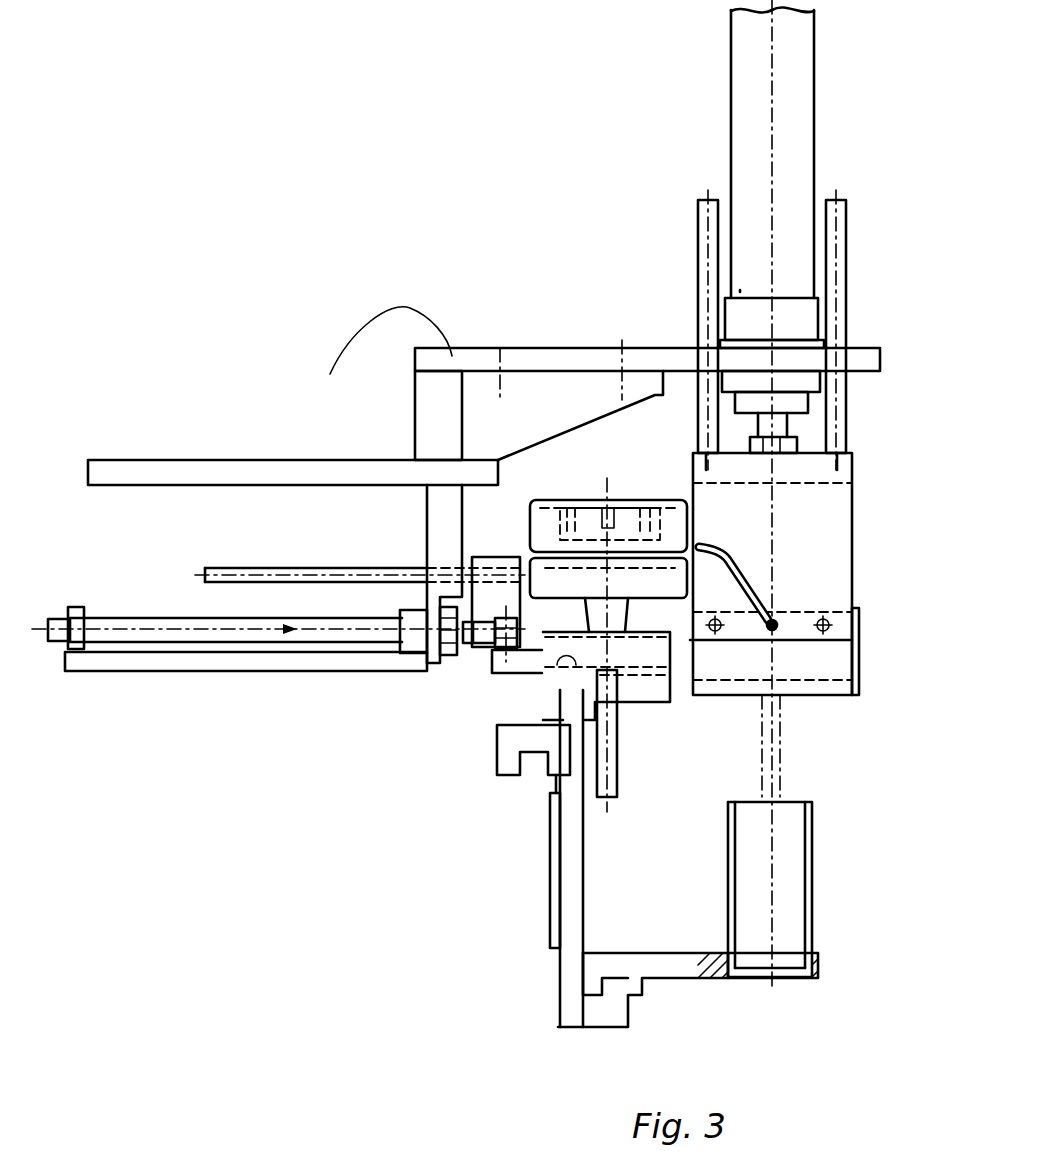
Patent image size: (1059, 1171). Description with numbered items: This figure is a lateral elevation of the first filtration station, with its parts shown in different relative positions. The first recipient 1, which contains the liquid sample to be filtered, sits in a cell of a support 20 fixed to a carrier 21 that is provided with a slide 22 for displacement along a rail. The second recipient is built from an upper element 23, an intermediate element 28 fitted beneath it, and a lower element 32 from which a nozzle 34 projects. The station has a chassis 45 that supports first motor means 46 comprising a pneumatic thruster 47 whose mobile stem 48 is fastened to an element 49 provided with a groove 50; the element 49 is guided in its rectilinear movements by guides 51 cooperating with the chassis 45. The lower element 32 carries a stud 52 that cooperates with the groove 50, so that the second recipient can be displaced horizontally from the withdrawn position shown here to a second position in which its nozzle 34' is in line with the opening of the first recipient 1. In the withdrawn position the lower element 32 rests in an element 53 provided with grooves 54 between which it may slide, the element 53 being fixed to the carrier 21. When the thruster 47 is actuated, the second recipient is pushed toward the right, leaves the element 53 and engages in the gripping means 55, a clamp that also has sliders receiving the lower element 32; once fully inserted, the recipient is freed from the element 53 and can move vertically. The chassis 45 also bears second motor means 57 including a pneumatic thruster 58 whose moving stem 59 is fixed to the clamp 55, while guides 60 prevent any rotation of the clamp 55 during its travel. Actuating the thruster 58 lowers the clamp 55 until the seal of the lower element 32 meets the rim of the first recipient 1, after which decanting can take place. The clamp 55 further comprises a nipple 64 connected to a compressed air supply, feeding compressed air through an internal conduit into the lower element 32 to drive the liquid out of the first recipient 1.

The first recipient 1 is at (805, 887).
The support 20 is at (676, 965).
The carrier 21 is at (578, 885).
The slide 22 is at (532, 762).
The upper element 23 is at (518, 514).
The intermediate element 28 is at (730, 695).
The lower element 32 is at (515, 690).
The nozzle 34 is at (644, 752).
The nozzle 34' is at (831, 746).
The chassis 45 is at (432, 385).
The first motor means 46 is at (151, 602).
The pneumatic thruster 47 is at (207, 634).
The mobile stem 48 is at (460, 637).
The element 49 is at (480, 565).
The groove 50 is at (494, 660).
The guides 51 is at (266, 573).
The stud 52 is at (516, 626).
The element 53 is at (655, 705).
The grooves 54 is at (560, 668).
The gripping means 55 is at (866, 561).
The second motor means 57 is at (826, 117).
The pneumatic thruster 58 is at (786, 52).
The moving stem 59 is at (773, 420).
The guides 60 is at (709, 218).
The nipple 64 is at (778, 618).